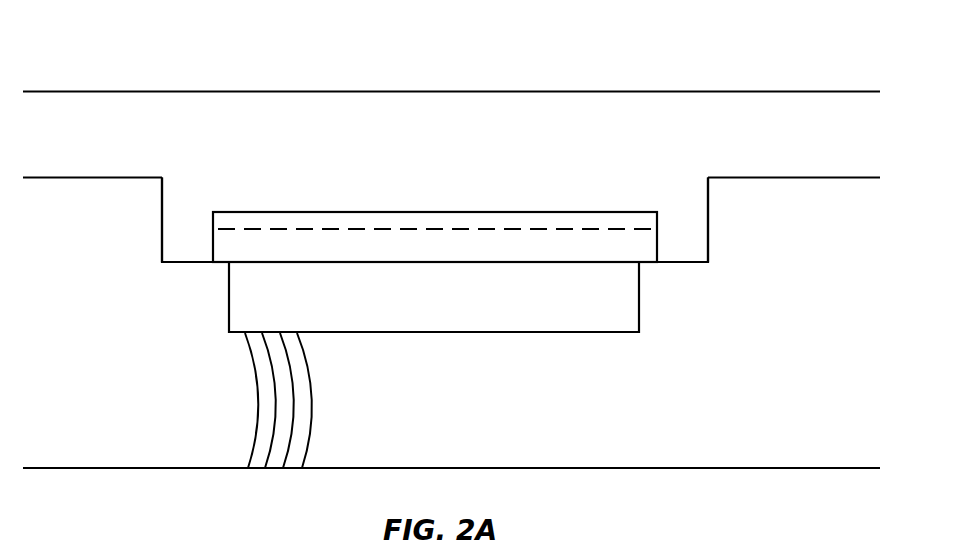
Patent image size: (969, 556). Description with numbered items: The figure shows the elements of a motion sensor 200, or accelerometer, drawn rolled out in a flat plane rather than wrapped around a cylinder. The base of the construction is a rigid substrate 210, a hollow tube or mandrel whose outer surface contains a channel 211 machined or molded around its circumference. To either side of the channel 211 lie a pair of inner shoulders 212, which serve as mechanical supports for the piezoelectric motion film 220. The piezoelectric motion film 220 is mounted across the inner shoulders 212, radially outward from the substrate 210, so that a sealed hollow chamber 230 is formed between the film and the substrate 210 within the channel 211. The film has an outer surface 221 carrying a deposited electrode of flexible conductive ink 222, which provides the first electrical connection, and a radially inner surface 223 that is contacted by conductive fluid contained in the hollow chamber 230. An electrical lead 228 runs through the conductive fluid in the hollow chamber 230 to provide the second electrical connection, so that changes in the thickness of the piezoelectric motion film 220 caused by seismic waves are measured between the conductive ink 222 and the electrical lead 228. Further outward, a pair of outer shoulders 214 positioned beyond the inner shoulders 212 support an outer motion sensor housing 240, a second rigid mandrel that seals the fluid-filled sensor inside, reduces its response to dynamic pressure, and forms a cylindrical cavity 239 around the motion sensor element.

The motion sensor 200 is at (142, 40).
The substrate 210 is at (108, 470).
The channel 211 is at (196, 208).
The inner shoulders 212 is at (195, 265).
The outer shoulders 214 is at (111, 177).
The piezoelectric motion film 220 is at (662, 242).
The outer surface 221 is at (305, 230).
The conductive ink 222 is at (605, 210).
The radially inner surface 223 is at (605, 265).
The electrical lead 228 is at (331, 388).
The hollow chamber 230 is at (434, 298).
The cylindrical cavity 239 is at (453, 206).
The outer motion sensor housing 240 is at (537, 91).